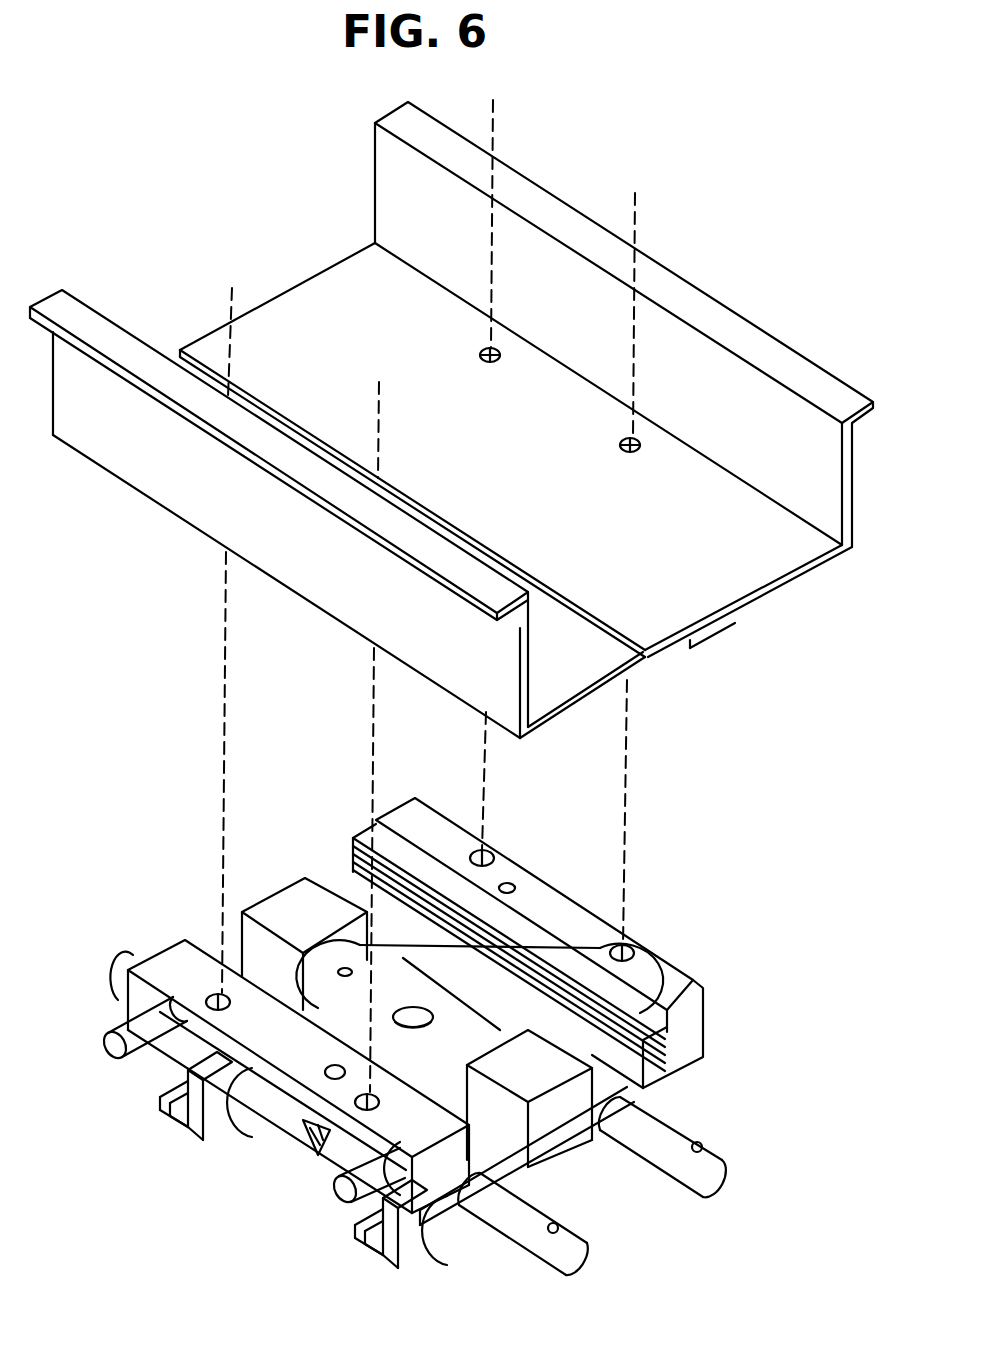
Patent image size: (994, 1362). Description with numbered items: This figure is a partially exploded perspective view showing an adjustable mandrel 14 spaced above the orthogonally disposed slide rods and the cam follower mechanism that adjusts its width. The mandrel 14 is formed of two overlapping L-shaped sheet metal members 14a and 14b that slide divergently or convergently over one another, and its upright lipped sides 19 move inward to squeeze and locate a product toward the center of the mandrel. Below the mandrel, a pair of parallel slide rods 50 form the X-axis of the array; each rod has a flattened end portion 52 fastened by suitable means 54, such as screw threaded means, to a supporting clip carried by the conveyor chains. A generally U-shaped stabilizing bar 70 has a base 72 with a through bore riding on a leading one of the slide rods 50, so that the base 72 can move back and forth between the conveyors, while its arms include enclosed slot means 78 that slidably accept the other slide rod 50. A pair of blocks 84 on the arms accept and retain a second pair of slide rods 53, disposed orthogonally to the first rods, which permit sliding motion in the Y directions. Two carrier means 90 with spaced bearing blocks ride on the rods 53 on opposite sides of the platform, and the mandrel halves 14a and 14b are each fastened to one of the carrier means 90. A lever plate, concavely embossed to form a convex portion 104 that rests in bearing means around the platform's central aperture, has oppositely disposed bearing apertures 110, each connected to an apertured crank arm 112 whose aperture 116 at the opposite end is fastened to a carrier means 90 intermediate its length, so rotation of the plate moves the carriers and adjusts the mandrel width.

The mandrel 14 is at (268, 258).
The L-shaped sheet metal member 14a is at (688, 575).
The L-shaped sheet metal member 14b is at (598, 683).
The upright lipped side 19 is at (370, 598).
The slide rod 50 is at (647, 1130).
The flattened end portion 52 is at (687, 1188).
The slide rod 53 is at (108, 1048).
The fastening means 54 is at (700, 1148).
The stabilizing bar 70 is at (543, 1175).
The base 72 is at (613, 1007).
The enclosed slot means 78 is at (437, 1220).
The block 84 is at (322, 931).
The carrier means 90 is at (540, 903).
The convex portion 104 is at (467, 1057).
The bearing aperture 110 is at (350, 968).
The crank arm 112 is at (435, 968).
The aperture 116 is at (510, 886).